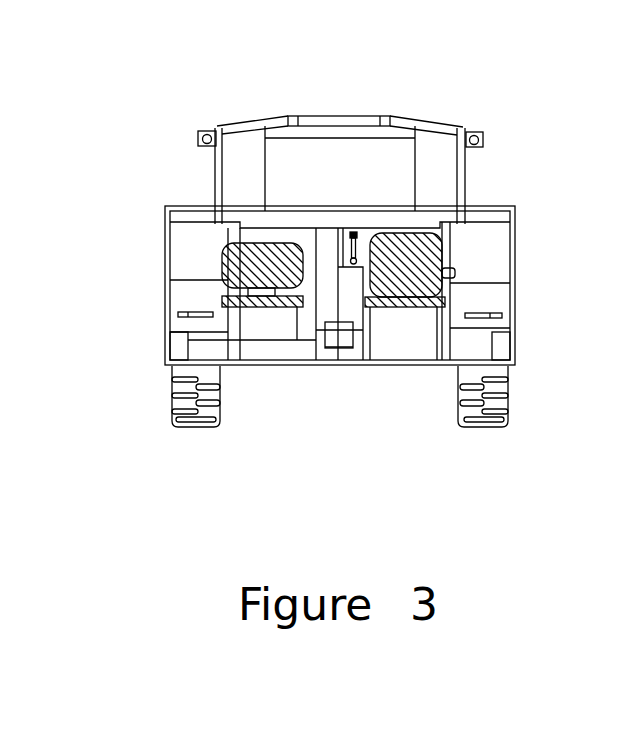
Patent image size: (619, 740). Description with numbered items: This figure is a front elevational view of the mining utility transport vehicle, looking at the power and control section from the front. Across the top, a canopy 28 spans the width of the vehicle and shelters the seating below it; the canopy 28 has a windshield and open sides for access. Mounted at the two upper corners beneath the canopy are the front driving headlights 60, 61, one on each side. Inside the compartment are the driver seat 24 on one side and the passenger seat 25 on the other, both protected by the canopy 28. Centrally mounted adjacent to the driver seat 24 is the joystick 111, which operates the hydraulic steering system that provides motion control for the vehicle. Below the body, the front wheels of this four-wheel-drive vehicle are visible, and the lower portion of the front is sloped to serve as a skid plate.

The canopy 28 is at (340, 117).
The front driving headlight 61 is at (198, 131).
The front driving headlight 60 is at (484, 132).
The joystick 111 is at (350, 232).
The passenger seating 25 is at (267, 304).
The driver seating 24 is at (402, 305).